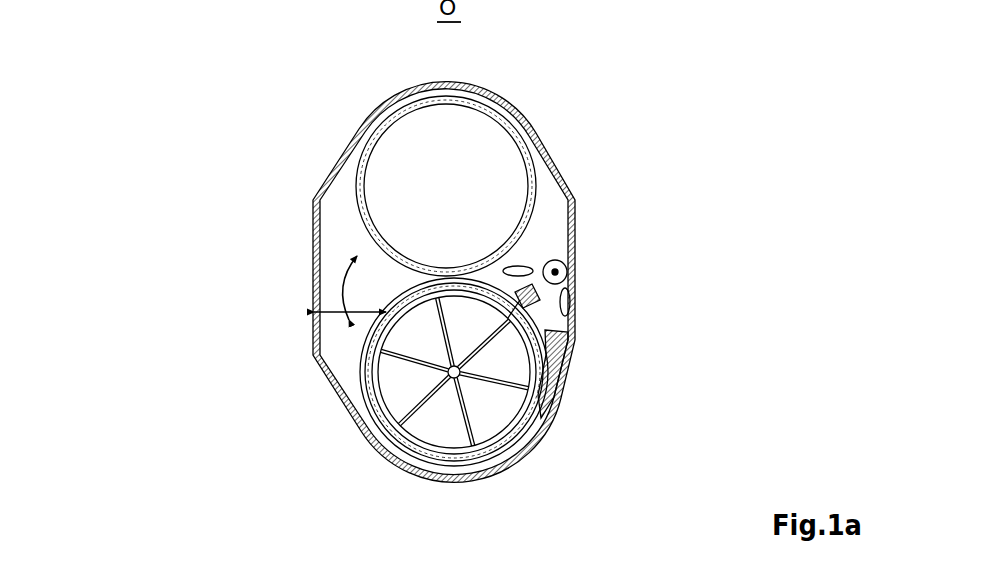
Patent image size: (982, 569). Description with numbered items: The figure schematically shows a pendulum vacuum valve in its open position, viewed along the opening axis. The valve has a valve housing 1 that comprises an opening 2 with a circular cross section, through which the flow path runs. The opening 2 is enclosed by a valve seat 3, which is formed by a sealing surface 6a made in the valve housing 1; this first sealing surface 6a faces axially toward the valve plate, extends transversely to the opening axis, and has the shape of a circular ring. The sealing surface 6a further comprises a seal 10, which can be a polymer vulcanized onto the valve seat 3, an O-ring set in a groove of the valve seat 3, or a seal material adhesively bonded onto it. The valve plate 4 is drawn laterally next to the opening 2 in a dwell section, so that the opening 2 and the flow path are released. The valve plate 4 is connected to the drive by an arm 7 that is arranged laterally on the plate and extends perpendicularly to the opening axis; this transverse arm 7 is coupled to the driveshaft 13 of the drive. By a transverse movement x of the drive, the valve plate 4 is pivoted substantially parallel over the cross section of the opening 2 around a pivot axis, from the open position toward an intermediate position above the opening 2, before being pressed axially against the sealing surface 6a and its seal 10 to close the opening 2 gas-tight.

The valve housing 1 is at (548, 197).
The opening 2 is at (430, 172).
The valve seat 3 is at (301, 186).
The sealing surface 6a is at (446, 186).
The seal 10 is at (355, 222).
The valve plate 4 is at (490, 405).
The arm 7 is at (553, 322).
The driveshaft 13 is at (555, 272).
The transverse movement x is at (335, 288).